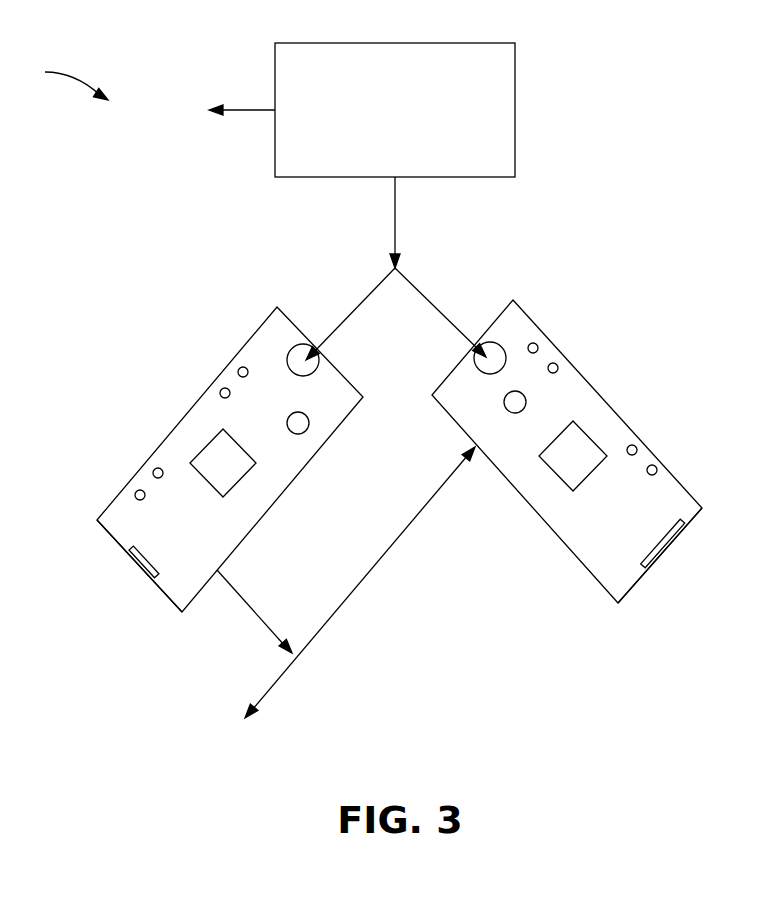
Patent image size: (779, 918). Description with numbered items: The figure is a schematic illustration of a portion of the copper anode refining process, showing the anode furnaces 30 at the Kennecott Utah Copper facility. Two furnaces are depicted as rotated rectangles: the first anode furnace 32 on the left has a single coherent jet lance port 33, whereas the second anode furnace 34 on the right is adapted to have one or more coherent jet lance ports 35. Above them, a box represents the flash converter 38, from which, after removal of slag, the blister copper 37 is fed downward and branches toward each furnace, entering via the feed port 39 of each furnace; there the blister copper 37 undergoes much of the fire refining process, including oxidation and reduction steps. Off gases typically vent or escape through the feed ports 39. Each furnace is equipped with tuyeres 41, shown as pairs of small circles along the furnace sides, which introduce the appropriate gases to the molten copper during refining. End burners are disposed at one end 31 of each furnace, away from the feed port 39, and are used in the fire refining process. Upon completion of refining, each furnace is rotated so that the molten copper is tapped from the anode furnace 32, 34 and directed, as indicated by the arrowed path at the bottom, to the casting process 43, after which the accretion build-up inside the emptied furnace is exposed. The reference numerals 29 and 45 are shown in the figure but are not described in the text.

The output beam 29 is at (249, 108).
The anode furnaces 30 is at (60, 78).
The end 31 is at (155, 583).
The first anode furnace 32 is at (275, 502).
The coherent jet lance port 33 is at (309, 426).
The second anode furnace 34 is at (570, 555).
The coherent jet lance port 35 is at (512, 413).
The blister copper 37 is at (393, 212).
The flash converter 38 is at (516, 108).
The feed port 39 is at (300, 344).
The tuyeres 41 is at (221, 385).
The casting process 43 is at (280, 678).
The slot 45 is at (147, 560).